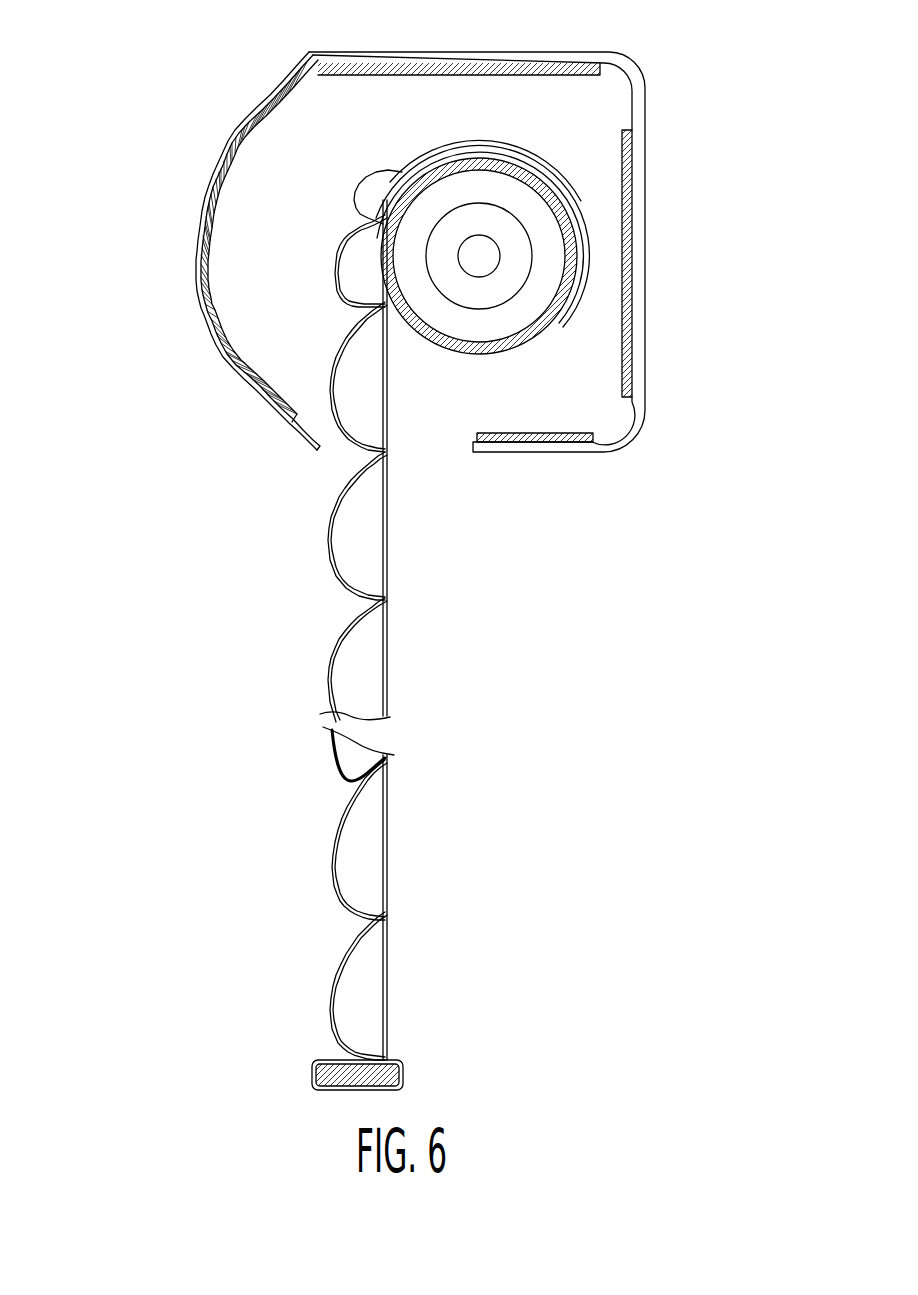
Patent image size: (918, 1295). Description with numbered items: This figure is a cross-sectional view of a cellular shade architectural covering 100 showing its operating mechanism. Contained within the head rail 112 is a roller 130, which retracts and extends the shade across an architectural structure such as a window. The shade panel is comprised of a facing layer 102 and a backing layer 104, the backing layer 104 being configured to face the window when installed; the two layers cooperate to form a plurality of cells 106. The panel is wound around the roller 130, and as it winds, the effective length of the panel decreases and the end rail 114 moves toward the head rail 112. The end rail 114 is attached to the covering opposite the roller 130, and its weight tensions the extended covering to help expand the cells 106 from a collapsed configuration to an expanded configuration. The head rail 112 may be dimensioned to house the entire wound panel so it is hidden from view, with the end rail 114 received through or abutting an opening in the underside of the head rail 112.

The architectural covering 100 is at (146, 103).
The facing layer 102 is at (244, 598).
The backing layer 104 is at (416, 797).
The cells 106 is at (366, 642).
The head rail 112 is at (639, 437).
The end rail 114 is at (403, 1070).
The roller 130 is at (594, 275).